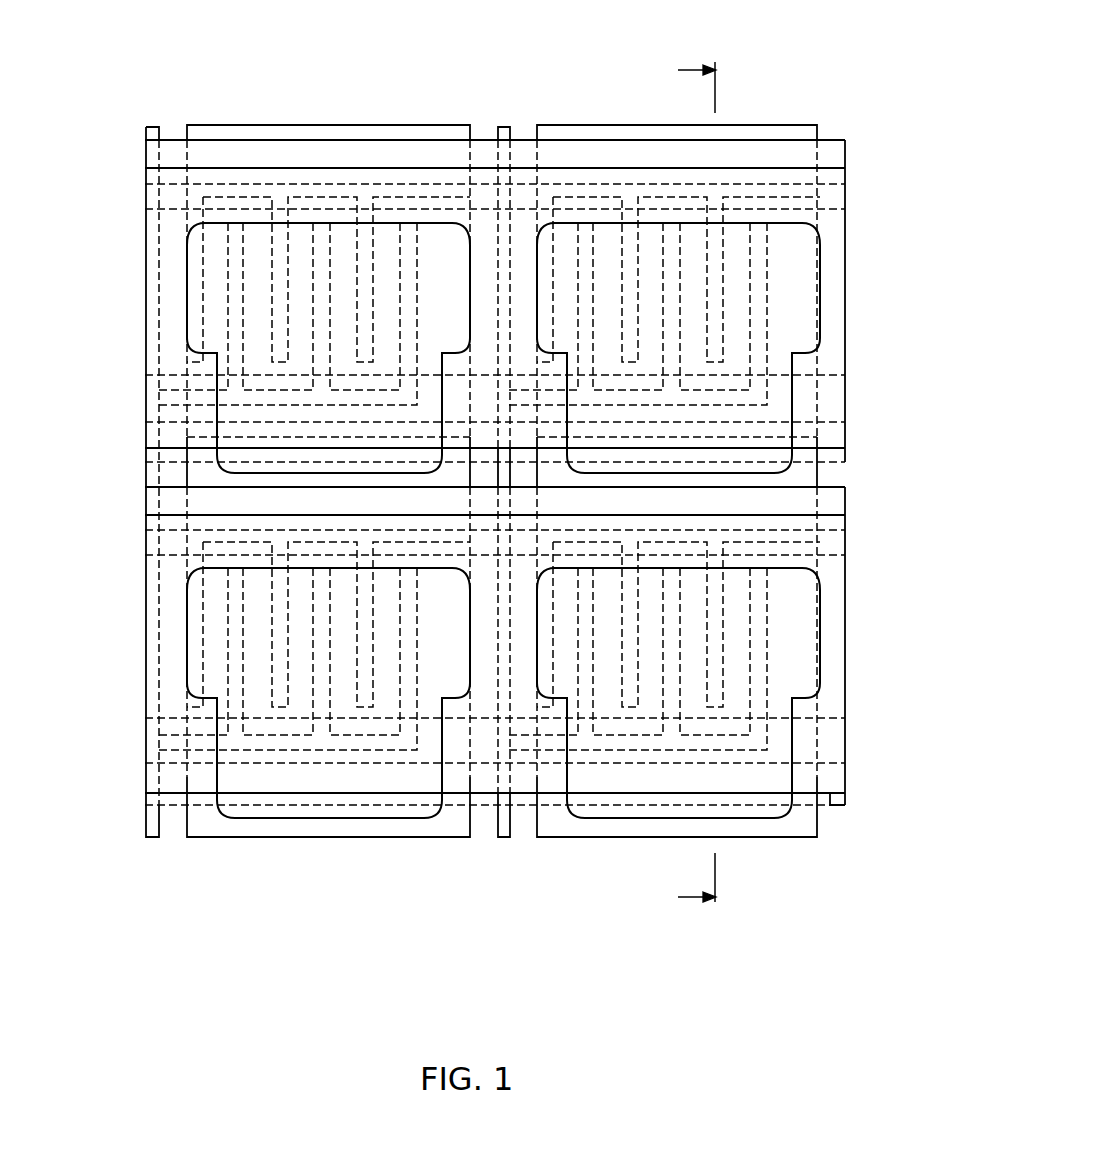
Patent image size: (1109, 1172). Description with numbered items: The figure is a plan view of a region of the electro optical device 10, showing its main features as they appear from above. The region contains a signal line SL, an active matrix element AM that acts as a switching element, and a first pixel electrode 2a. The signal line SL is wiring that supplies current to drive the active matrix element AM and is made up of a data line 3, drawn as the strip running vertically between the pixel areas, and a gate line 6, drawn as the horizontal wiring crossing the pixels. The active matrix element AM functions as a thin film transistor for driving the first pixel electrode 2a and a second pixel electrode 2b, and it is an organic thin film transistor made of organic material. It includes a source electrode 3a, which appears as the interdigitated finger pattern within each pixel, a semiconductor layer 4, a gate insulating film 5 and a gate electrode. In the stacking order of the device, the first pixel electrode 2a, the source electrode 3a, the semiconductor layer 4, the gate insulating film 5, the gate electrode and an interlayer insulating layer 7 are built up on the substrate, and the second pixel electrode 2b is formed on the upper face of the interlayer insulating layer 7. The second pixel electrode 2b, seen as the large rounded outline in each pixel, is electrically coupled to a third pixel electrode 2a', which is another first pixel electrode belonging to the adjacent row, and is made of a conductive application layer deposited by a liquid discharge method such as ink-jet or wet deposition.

The electro optical device 10 is at (845, 102).
The first pixel electrode 2a is at (502, 251).
The third pixel electrode 2a' is at (444, 637).
The second pixel electrode 2b is at (188, 368).
The data line 3 is at (503, 838).
The source electrode 3a is at (215, 632).
The semiconductor layer 4 is at (165, 528).
The gate insulating film 5 is at (836, 503).
The gate line 6 is at (168, 552).
The interlayer insulating layer 7 is at (834, 807).